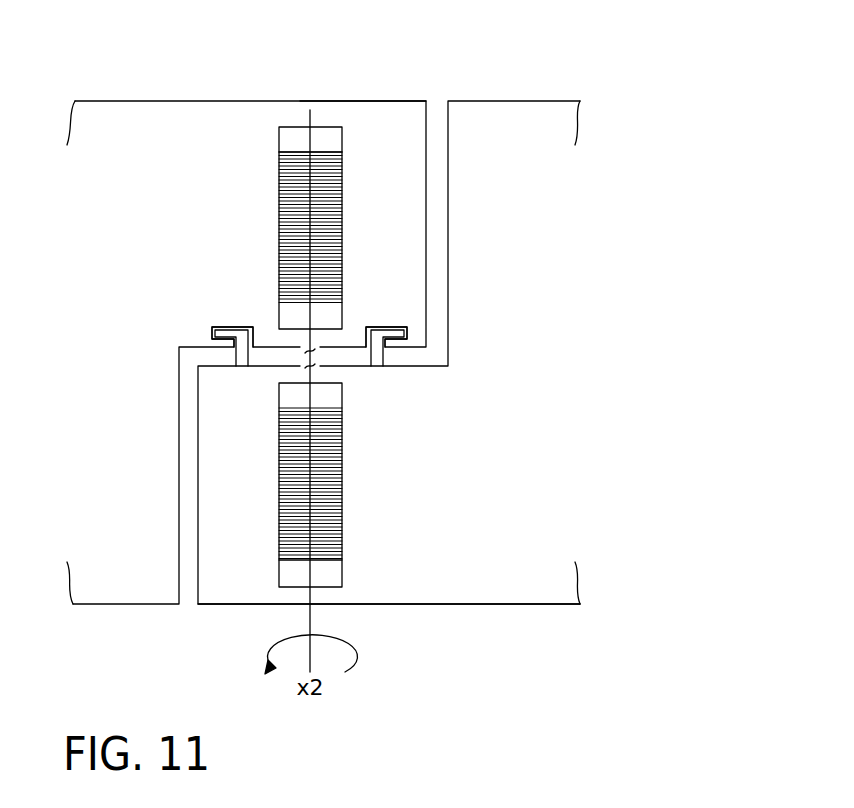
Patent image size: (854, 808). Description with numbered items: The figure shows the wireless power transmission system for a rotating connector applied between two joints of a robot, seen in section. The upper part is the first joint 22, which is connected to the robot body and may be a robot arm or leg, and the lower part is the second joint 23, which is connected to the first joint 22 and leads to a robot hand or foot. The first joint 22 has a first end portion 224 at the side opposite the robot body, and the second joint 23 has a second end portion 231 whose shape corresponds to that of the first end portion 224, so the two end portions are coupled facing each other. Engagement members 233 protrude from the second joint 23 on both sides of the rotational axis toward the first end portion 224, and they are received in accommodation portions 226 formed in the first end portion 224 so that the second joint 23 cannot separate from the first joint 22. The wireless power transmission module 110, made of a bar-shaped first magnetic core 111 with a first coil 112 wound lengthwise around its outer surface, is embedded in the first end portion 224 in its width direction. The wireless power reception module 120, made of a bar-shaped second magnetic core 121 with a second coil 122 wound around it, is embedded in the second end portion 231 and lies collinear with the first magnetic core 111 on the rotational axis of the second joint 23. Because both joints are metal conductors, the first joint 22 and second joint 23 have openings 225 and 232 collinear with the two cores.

The first joint 22 is at (118, 118).
The second joint 23 is at (545, 118).
The first end portion 224 is at (393, 100).
The second end portion 231 is at (235, 605).
The accommodation portion 226 is at (223, 328).
The engagement member 233 is at (218, 337).
The opening 225 is at (310, 350).
The opening 232 is at (312, 366).
The wireless power transmission module 110 is at (249, 228).
The first magnetic core 111 is at (283, 137).
The first coil 112 is at (290, 212).
The wireless power reception module 120 is at (371, 488).
The second magnetic core 121 is at (337, 577).
The second coil 122 is at (332, 530).